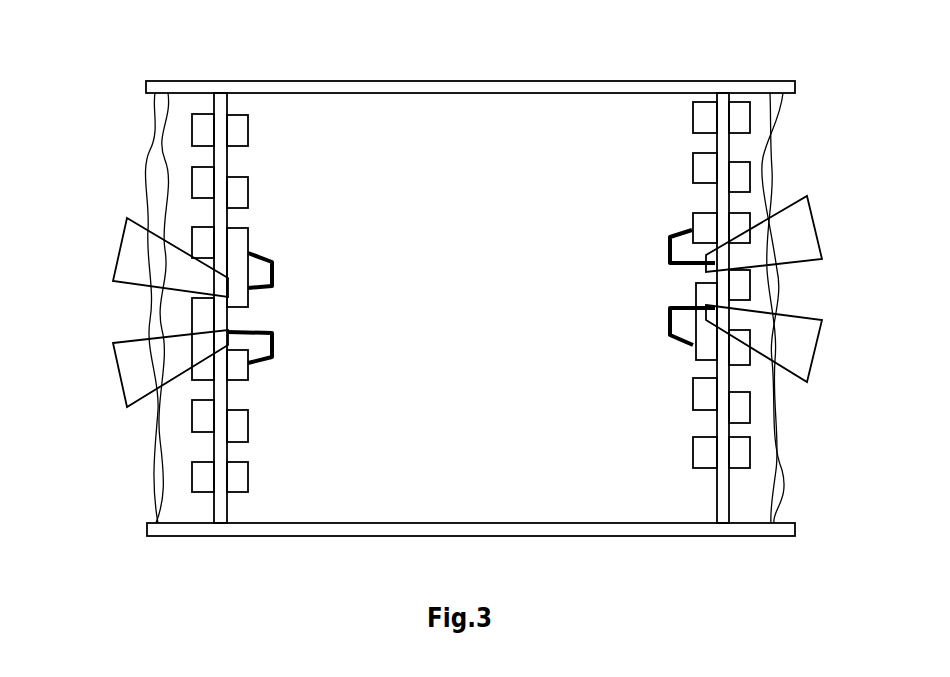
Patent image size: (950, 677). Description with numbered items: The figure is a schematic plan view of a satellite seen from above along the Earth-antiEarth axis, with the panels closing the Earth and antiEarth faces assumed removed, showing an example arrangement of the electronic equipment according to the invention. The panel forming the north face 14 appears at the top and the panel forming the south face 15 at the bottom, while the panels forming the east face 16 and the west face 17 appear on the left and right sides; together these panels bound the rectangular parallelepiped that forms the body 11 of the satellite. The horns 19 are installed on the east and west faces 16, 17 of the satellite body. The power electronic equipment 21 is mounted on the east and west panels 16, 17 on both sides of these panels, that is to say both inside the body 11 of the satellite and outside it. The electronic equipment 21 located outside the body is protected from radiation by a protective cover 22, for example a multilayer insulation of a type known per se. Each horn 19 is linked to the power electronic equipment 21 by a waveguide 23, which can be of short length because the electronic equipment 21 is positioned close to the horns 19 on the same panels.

The body 11 is at (472, 339).
The north face panel 14 is at (550, 85).
The south face panel 15 is at (558, 537).
The east face panel 16 is at (720, 158).
The west face panel 17 is at (212, 142).
The horn 19 is at (132, 260).
The power electronic equipment 21 is at (248, 422).
The protective cover 22 is at (170, 463).
The waveguide 23 is at (272, 270).